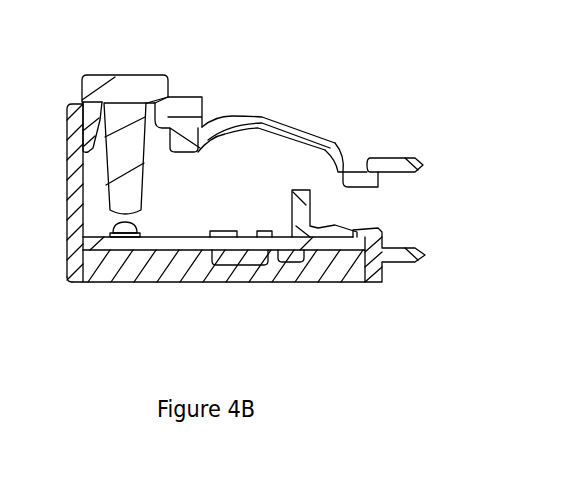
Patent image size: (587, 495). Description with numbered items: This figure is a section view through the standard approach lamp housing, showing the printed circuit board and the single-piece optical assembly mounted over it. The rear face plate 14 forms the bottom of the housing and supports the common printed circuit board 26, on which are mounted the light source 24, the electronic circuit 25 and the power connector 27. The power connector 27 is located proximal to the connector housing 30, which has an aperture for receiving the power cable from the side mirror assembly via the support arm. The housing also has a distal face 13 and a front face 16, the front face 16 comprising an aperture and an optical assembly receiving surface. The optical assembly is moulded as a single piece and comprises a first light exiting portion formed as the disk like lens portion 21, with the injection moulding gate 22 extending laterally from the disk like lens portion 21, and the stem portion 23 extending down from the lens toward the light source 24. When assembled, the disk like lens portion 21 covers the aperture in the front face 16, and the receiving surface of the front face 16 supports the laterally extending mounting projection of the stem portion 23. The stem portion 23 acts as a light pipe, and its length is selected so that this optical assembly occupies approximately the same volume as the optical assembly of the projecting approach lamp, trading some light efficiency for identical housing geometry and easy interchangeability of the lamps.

The disk like lens portion 21 is at (115, 71).
The injection moulding gate 22 is at (186, 96).
The front face 16 is at (262, 107).
The power connector 27 is at (310, 171).
The connector housing 30 is at (395, 155).
The stem portion 23 is at (151, 160).
The distal face 13 is at (73, 227).
The light source 24 is at (123, 240).
The printed circuit board 26 is at (177, 253).
The electronic circuit 25 is at (233, 260).
The rear face plate 14 is at (313, 287).